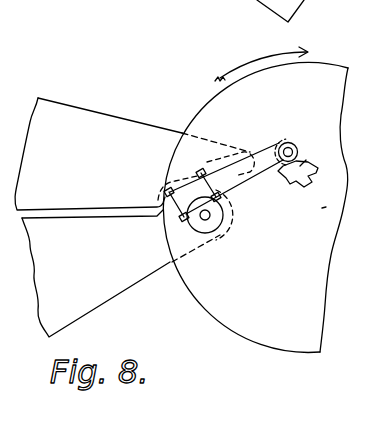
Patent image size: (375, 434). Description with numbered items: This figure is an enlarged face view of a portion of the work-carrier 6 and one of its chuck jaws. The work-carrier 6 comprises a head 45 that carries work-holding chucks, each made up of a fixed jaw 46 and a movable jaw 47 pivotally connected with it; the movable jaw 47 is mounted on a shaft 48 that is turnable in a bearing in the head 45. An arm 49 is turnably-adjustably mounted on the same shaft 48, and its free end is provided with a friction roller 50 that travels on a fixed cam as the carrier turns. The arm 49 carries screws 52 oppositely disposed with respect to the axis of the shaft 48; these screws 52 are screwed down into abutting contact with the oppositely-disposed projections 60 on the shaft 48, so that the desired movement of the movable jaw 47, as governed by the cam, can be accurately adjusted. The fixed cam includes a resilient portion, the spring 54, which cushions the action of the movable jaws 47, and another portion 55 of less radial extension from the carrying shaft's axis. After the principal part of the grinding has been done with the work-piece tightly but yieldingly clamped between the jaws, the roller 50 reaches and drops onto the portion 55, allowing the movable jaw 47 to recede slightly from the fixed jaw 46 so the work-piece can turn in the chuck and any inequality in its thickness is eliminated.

The work-carrier 6 is at (255, 199).
The head 45 is at (322, 208).
The fixed jaw 46 is at (132, 154).
The movable jaw 47 is at (121, 273).
The shaft 48 is at (233, 221).
The arm 49 is at (261, 150).
The friction roller 50 is at (296, 144).
The screws 52 is at (166, 192).
The spring 54 is at (278, 173).
The portion of less radial extension 55 is at (306, 160).
The projections 60 is at (228, 199).